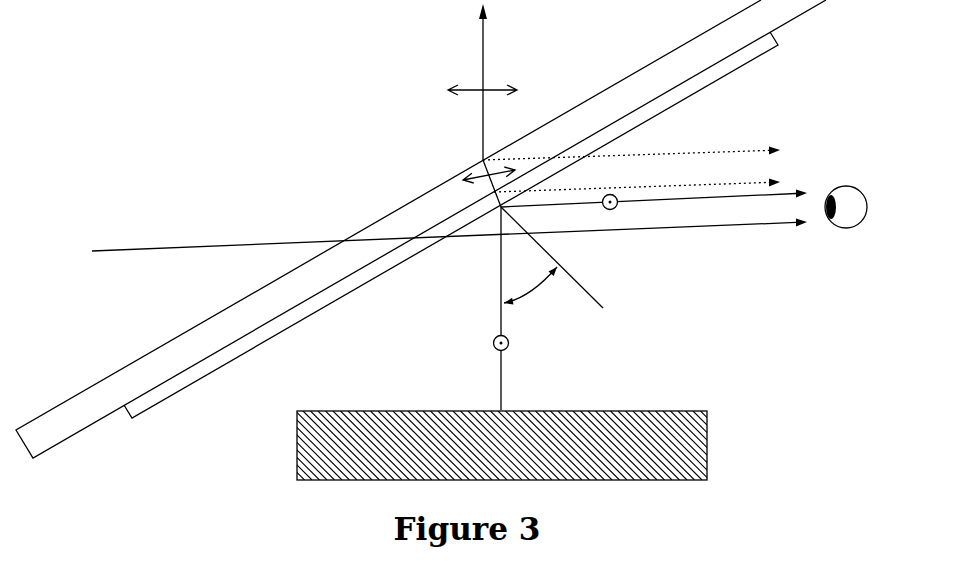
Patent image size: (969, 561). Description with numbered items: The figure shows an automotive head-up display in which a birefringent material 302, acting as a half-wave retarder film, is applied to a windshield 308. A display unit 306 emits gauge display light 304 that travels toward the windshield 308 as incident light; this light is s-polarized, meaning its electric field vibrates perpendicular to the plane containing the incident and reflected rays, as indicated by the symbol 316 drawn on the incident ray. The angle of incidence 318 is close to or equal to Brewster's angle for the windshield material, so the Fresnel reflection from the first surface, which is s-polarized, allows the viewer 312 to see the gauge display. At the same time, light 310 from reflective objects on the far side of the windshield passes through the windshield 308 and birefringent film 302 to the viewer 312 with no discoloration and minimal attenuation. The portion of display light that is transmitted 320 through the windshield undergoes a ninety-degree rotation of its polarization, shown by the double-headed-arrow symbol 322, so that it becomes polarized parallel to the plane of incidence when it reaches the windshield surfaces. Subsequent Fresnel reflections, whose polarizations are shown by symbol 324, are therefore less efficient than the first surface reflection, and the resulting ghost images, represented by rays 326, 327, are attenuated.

The birefringent material 302 is at (160, 395).
The incident light 304 is at (502, 385).
The display unit 306 is at (707, 442).
The windshield 308 is at (118, 390).
The transmitted light 310 is at (160, 249).
The viewer 312 is at (843, 228).
The polarization symbol 316 is at (493, 343).
The angle of incidence 318 is at (502, 303).
The transmitted light 320 is at (483, 52).
The double-headed-arrow symbol 322 is at (483, 160).
The polarization symbol 324 is at (487, 90).
The ghost image ray 326 is at (760, 182).
The ghost image ray 327 is at (733, 151).